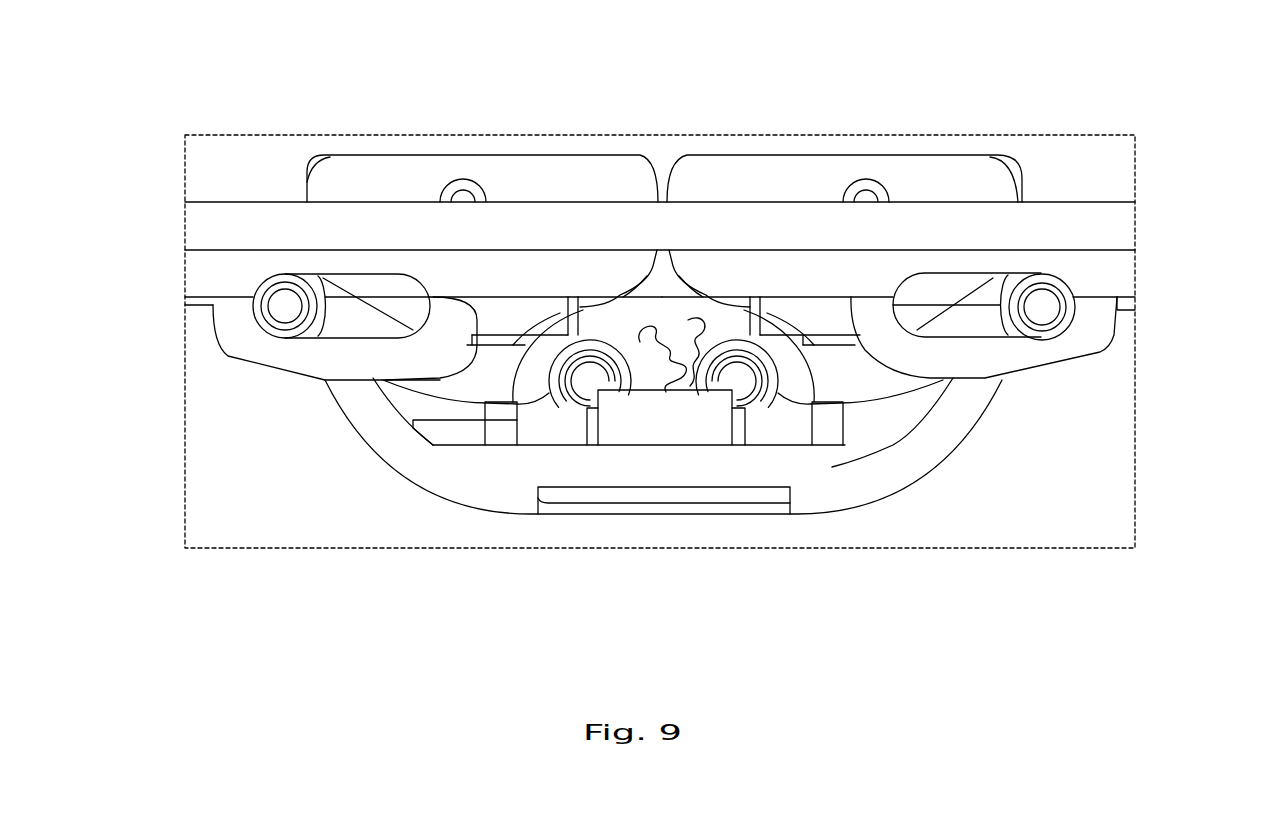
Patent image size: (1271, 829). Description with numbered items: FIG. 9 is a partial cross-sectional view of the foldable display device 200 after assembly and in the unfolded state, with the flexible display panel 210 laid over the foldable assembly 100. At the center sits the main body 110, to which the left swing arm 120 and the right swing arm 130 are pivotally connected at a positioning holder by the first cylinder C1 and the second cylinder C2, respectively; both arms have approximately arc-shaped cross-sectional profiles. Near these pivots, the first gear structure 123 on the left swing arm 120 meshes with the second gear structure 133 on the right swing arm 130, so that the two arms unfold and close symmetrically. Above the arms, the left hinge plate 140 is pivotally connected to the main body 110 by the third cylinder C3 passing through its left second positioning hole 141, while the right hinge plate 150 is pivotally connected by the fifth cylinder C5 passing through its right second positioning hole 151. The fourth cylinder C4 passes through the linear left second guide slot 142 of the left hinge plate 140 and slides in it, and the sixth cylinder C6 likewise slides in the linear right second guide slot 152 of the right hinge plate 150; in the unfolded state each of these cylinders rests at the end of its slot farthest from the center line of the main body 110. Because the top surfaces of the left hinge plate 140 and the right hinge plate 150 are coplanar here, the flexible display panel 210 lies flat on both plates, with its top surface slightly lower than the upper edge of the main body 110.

The foldable display device 200 is at (132, 46).
The flexible display panel 210 is at (1136, 228).
The foldable assembly 100 is at (327, 455).
The main body 110 is at (1020, 202).
The left swing arm 120 is at (487, 397).
The first gear structure 123 is at (648, 392).
The right swing arm 130 is at (830, 390).
The second gear structure 133 is at (687, 378).
The left hinge plate 140 is at (563, 178).
The left second positioning hole 141 is at (438, 202).
The left second guide slot 142 is at (380, 283).
The right hinge plate 150 is at (755, 178).
The right second positioning hole 151 is at (890, 202).
The right second guide slot 152 is at (937, 290).
The first cylinder C1 is at (590, 398).
The second cylinder C2 is at (738, 395).
The third cylinder C3 is at (462, 205).
The fourth cylinder C4 is at (288, 312).
The fifth cylinder C5 is at (873, 205).
The sixth cylinder C6 is at (1048, 314).